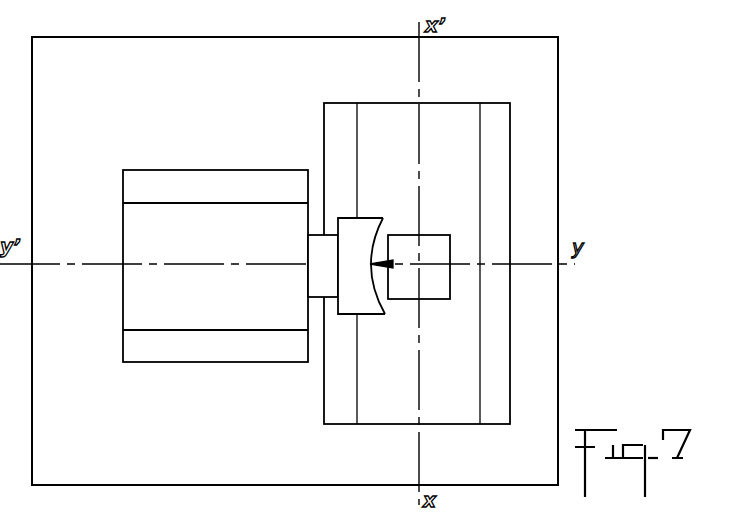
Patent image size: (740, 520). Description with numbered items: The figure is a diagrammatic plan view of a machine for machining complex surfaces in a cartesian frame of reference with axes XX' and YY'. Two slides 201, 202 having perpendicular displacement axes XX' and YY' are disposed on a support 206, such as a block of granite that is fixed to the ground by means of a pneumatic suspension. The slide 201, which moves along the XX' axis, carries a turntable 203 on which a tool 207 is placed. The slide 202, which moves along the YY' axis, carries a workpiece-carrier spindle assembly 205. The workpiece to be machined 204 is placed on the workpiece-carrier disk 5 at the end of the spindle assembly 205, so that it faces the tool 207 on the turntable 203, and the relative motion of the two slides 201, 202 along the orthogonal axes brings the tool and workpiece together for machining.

The workpiece-carrier disk 5 is at (330, 245).
The slide 201 is at (500, 113).
The slide 202 is at (194, 185).
The turntable 203 is at (436, 245).
The workpiece to be machined 204 is at (368, 223).
The workpiece-carrier spindle assembly 205 is at (129, 236).
The support 206 is at (165, 62).
The tool 207 is at (373, 268).